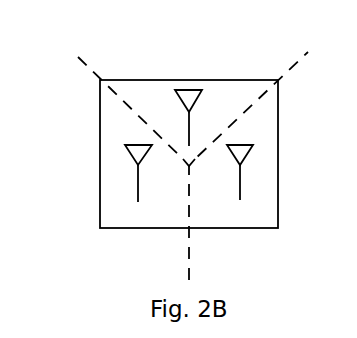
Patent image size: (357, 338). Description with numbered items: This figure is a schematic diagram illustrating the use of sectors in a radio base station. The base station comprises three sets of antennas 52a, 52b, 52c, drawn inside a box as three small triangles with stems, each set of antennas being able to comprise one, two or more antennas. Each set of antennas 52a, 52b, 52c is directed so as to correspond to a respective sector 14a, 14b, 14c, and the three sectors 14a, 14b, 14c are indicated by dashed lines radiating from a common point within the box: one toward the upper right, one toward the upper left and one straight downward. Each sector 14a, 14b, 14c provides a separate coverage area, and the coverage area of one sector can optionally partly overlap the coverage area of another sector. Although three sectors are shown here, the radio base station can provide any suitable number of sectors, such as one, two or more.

The sector 14a is at (328, 128).
The sector 14b is at (90, 128).
The sector 14c is at (211, 36).
The set of antennas 52a is at (247, 156).
The set of antennas 52b is at (131, 157).
The set of antennas 52c is at (192, 88).